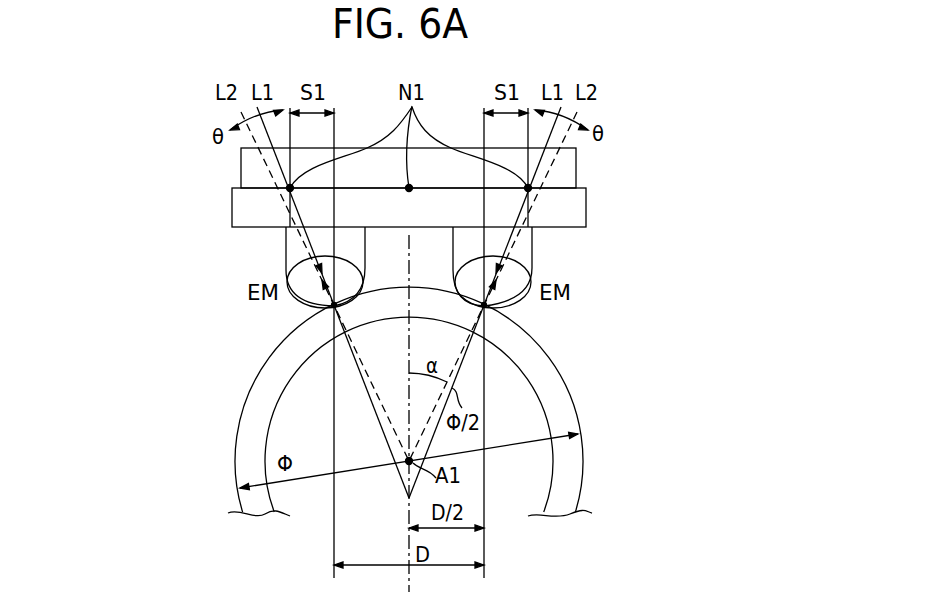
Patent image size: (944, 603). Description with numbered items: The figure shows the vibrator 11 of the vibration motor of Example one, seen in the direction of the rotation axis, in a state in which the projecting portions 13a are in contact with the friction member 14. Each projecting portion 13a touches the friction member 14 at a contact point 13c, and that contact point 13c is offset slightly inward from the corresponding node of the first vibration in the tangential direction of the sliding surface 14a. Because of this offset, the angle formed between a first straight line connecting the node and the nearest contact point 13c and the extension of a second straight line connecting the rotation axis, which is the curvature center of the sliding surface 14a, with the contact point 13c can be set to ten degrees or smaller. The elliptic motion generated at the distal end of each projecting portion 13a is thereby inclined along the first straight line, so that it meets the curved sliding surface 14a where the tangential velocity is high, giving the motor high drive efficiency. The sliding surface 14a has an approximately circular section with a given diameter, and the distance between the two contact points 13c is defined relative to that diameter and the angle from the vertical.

The vibrator 11 is at (101, 97).
The projecting portion 13a is at (293, 261).
The contact point 13c is at (305, 330).
The friction member 14 is at (250, 422).
The sliding surface 14a is at (262, 371).